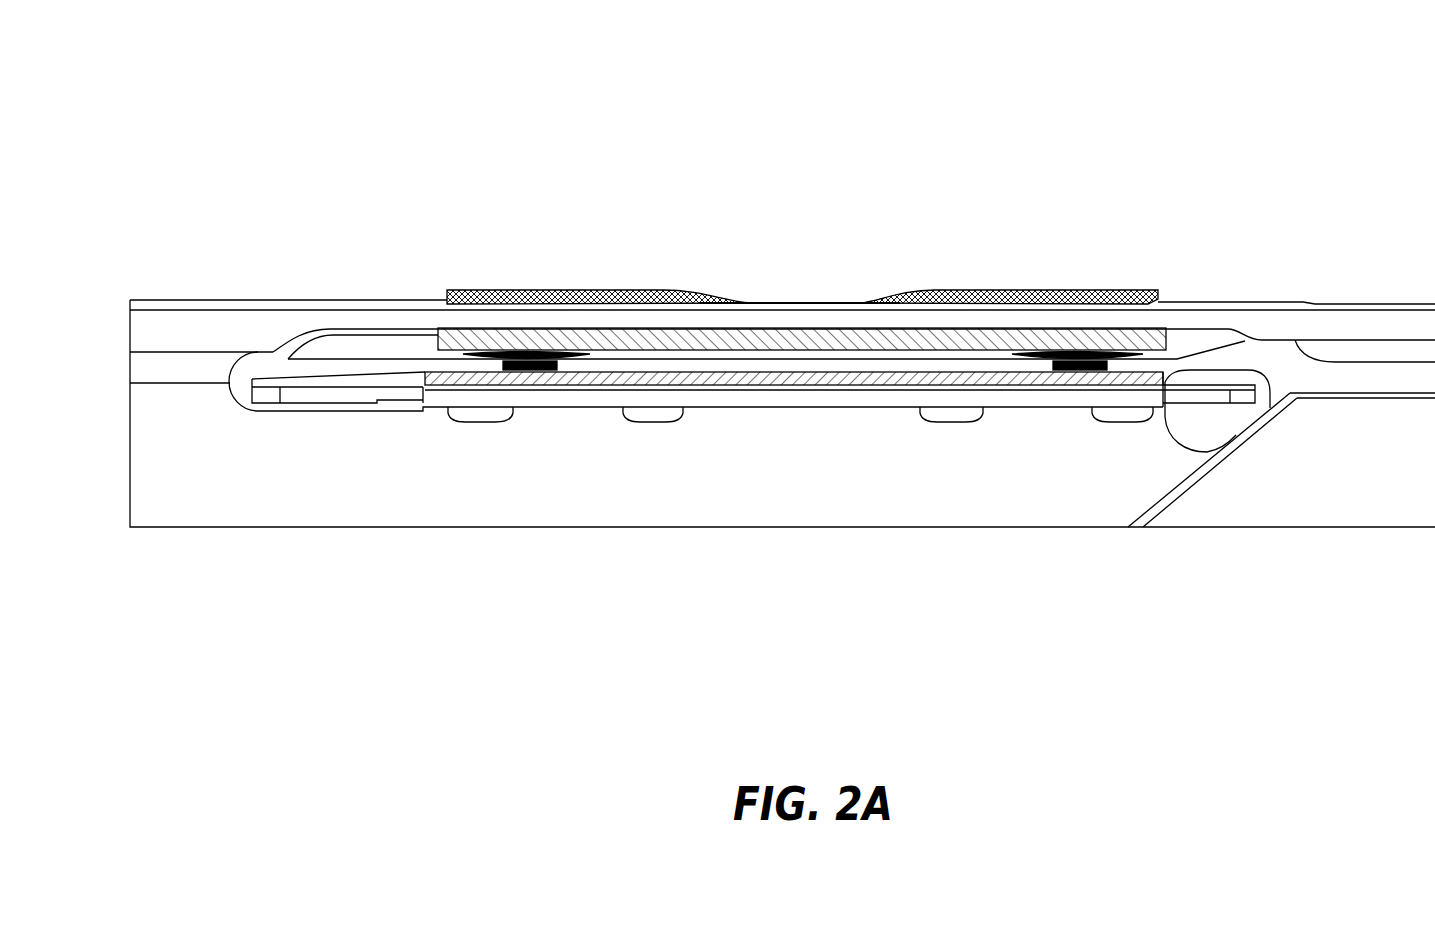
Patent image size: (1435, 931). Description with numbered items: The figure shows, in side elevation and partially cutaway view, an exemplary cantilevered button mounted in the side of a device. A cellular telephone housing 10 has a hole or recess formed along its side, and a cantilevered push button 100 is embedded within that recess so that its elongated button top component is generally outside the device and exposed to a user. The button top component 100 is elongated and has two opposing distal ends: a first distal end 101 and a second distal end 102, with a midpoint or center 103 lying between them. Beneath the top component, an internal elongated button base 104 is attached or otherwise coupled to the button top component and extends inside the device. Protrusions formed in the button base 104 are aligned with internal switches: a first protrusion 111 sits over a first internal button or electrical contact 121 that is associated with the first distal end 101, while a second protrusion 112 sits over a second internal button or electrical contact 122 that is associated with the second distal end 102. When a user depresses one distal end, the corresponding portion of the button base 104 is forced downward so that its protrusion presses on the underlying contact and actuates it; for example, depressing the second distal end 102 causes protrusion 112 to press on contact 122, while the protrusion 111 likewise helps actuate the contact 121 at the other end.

The housing 10 is at (184, 330).
The cantilevered push button 100 is at (1017, 137).
The first distal end 101 is at (455, 290).
The second distal end 102 is at (1137, 294).
The midpoint or center 103 is at (795, 298).
The elongated button base 104 is at (700, 337).
The protrusion 111 is at (527, 350).
The protrusion 112 is at (1075, 350).
The first internal button or electrical contact 121 is at (530, 370).
The second internal button or electrical contact 122 is at (1071, 368).